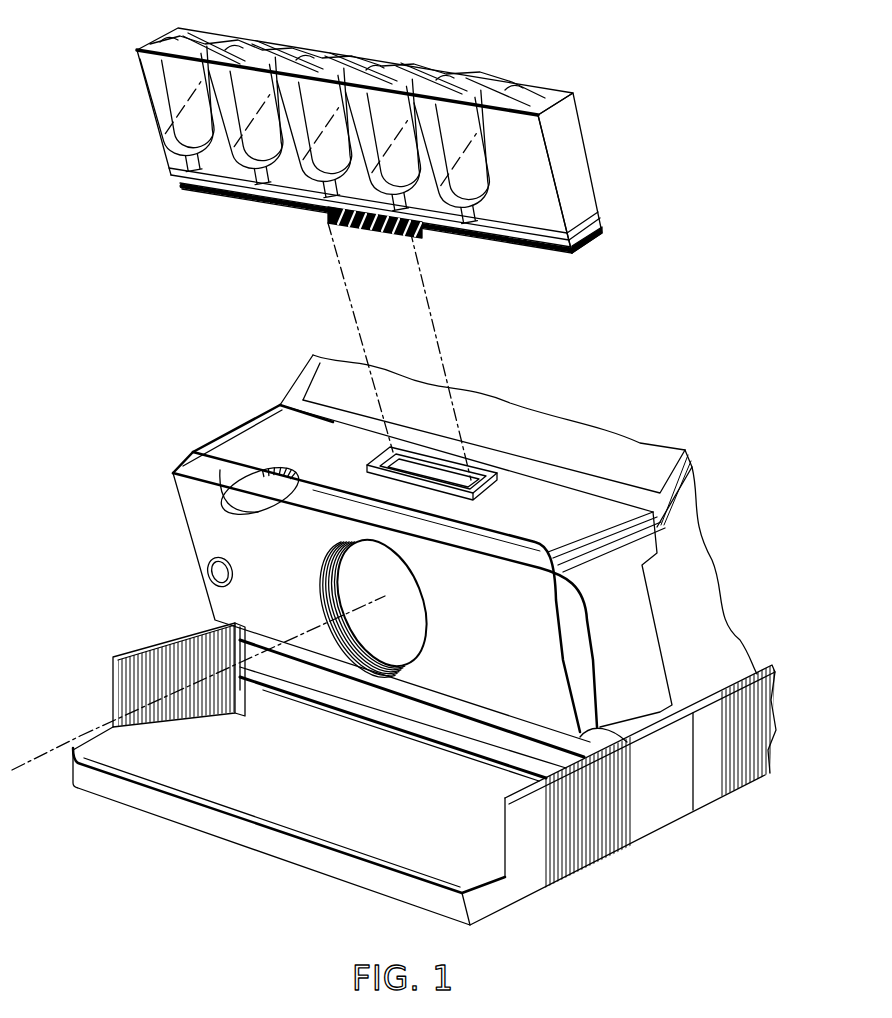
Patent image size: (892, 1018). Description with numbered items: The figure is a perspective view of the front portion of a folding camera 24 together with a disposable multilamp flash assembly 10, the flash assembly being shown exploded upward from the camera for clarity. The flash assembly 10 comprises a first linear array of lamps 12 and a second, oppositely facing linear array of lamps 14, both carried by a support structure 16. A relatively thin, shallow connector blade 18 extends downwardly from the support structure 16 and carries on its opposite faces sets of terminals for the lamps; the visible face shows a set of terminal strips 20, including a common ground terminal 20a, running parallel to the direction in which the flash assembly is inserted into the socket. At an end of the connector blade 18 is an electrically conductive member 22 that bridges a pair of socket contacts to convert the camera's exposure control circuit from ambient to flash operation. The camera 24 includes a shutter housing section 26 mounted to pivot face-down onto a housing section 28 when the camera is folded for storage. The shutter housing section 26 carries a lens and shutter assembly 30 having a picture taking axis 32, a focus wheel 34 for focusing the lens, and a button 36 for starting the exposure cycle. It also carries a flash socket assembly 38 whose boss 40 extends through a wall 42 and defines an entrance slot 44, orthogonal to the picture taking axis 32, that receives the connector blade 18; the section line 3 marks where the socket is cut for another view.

The multilamp flash assembly 10 is at (414, 152).
The first linear array of lamps 12 is at (258, 150).
The second linear array of lamps 14 is at (300, 44).
The support structure 16 is at (597, 240).
The connector blade 18 is at (413, 231).
The terminal strips 20 is at (391, 251).
The common ground terminal 20a is at (360, 223).
The electrically conductive member 22 is at (327, 212).
The folding camera 24 is at (393, 568).
The shutter housing section 26 is at (627, 593).
The housing section 28 is at (670, 808).
The lens and shutter assembly 30 is at (401, 606).
The picture taking axis 32 is at (323, 617).
The focus wheel 34 is at (288, 472).
The button 36 is at (208, 577).
The flash socket assembly 38 is at (443, 455).
The boss 40 is at (486, 492).
The wall 42 is at (318, 428).
The entrance slot 44 is at (433, 465).
The section line 3- 3 is at (350, 438).